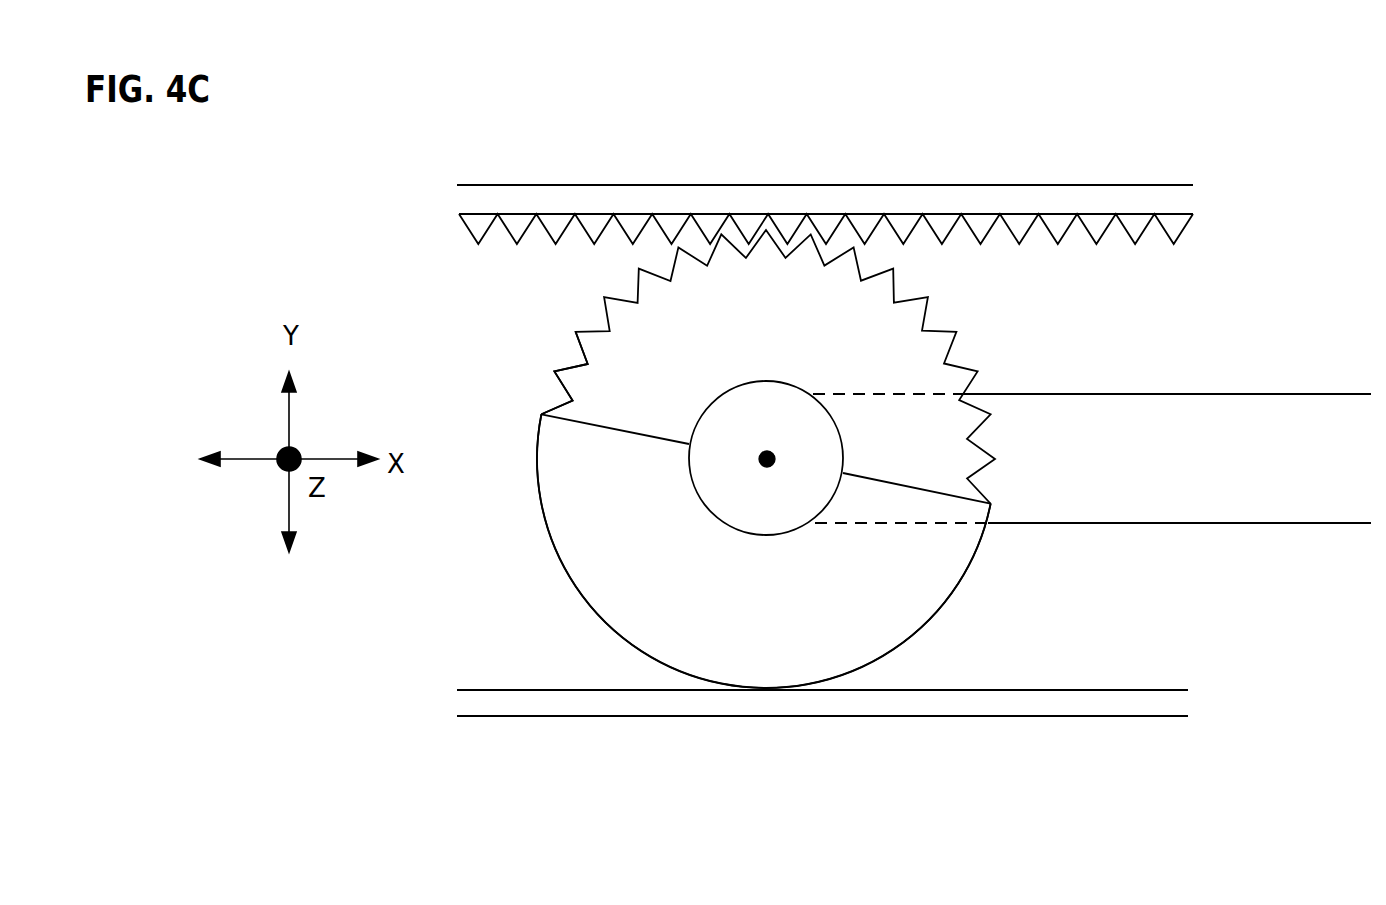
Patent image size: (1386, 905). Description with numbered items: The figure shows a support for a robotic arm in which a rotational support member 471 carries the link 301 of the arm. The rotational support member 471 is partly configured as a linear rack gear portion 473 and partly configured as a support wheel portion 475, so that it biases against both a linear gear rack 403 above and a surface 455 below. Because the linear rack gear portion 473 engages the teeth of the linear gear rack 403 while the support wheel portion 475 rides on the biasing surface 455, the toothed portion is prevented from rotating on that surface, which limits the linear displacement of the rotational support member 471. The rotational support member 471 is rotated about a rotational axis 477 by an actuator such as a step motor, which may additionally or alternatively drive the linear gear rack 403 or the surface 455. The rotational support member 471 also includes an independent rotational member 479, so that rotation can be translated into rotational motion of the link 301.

The link 301 is at (1292, 407).
The linear gear rack 403 is at (1150, 242).
The surface 455 is at (1148, 689).
The rotational support member 471 is at (976, 311).
The linear rack gear portion 473 is at (610, 378).
The support wheel portion 475 is at (897, 573).
The rotational axis 477 is at (763, 466).
The independent rotational member 479 is at (768, 401).